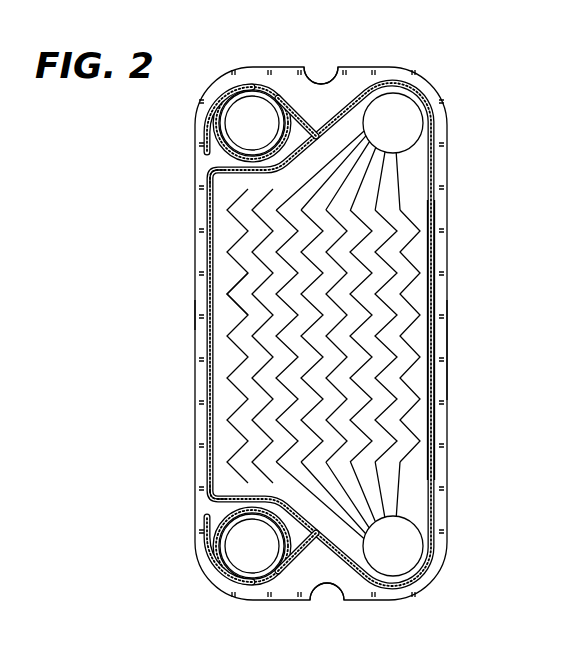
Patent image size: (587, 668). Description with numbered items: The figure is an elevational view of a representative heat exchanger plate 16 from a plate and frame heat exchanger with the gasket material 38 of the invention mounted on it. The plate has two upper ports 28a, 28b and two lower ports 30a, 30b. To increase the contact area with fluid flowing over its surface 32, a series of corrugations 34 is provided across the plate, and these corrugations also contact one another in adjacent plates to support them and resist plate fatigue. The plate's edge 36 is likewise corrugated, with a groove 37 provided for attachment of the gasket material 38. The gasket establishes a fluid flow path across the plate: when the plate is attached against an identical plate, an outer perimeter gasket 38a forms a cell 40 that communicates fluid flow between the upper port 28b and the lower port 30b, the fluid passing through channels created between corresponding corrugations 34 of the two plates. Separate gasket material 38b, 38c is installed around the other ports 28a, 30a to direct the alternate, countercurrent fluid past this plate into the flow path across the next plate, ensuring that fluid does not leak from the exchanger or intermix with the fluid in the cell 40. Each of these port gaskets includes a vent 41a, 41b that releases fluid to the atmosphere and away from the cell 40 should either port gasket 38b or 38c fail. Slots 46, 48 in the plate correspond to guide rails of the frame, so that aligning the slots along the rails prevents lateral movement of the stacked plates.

The heat exchanger plate 16 is at (486, 90).
The upper port 28a is at (258, 88).
The upper port 28b is at (417, 98).
The lower port 30a is at (227, 545).
The lower port 30b is at (425, 540).
The surface 32 is at (375, 302).
The corrugations 34 is at (235, 280).
The edge 36 is at (207, 345).
The groove 37 is at (442, 353).
The gasket material 38 is at (357, 100).
The outer perimeter gasket 38a is at (432, 212).
The gasket material 38b is at (240, 86).
The gasket material 38c is at (218, 565).
The cell 40 is at (407, 175).
The vent 41a is at (207, 172).
The vent 41b is at (212, 502).
The slot 46 is at (323, 83).
The slot 48 is at (325, 583).